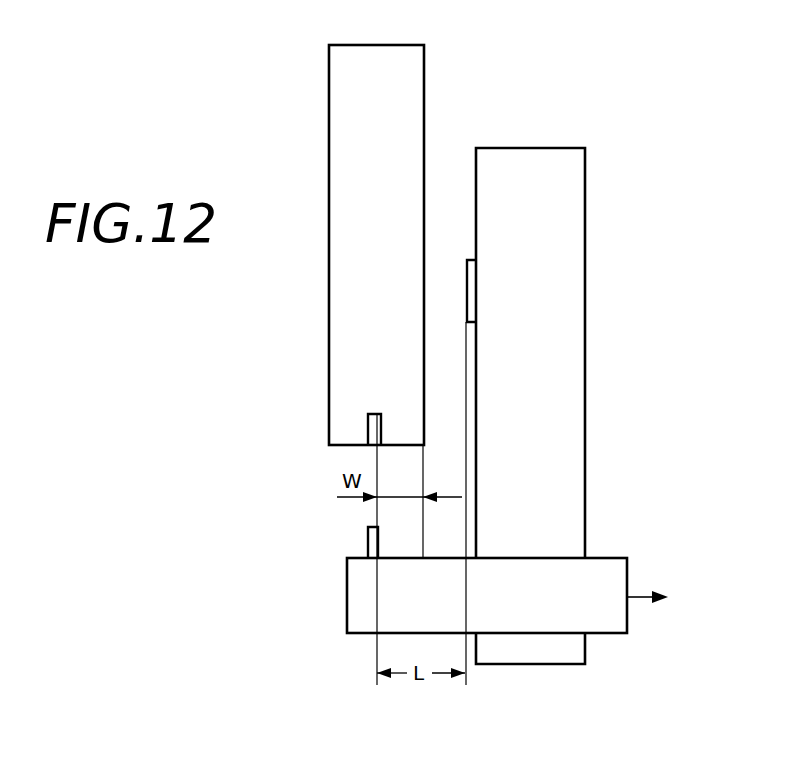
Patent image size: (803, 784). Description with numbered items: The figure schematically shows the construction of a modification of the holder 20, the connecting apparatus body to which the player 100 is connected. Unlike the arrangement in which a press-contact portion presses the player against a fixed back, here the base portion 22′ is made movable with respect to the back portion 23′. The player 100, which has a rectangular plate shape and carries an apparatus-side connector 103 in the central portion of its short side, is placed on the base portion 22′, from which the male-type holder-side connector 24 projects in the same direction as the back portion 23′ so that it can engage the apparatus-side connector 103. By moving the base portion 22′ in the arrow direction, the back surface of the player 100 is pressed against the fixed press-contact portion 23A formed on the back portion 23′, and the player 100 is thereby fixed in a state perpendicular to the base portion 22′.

The player 100 is at (341, 68).
The apparatus-side connector 103 is at (368, 428).
The holder 20 is at (536, 379).
The back portion 23′ is at (557, 272).
The press-contact portion 23A is at (470, 260).
The holder-side connector 24 is at (368, 540).
The base portion 22′ is at (357, 620).